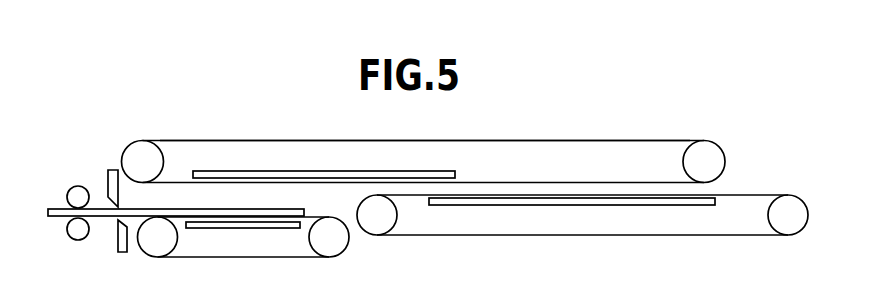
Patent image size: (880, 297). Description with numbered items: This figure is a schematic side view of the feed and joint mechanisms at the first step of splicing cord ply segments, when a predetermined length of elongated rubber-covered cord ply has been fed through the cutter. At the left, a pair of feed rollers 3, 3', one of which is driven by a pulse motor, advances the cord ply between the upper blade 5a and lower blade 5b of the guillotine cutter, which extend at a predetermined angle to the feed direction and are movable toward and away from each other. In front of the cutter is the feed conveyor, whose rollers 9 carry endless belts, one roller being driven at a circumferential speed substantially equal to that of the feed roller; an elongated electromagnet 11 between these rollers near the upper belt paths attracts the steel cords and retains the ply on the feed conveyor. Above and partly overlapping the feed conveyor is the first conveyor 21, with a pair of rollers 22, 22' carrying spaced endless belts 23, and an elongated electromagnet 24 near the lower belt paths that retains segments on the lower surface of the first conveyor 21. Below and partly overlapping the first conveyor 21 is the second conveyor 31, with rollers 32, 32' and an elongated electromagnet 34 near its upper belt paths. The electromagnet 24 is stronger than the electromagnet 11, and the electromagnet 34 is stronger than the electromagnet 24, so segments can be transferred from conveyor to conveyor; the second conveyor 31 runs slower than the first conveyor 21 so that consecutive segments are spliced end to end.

The feed roller 3 is at (68, 186).
The feed roller 3' is at (71, 245).
The upper blade 5a is at (110, 170).
The lower blade 5b is at (118, 253).
The roller 9 is at (153, 258).
The elongated electromagnet 11 is at (243, 229).
The first conveyor 21 is at (394, 139).
The roller 22 is at (148, 145).
The roller 22' is at (707, 140).
The endless belts 23 is at (285, 140).
The elongated electromagnet 24 is at (340, 170).
The second conveyor 31 is at (745, 173).
The roller 32 is at (399, 215).
The roller 32' is at (764, 215).
The elongated electromagnet 34 is at (580, 205).